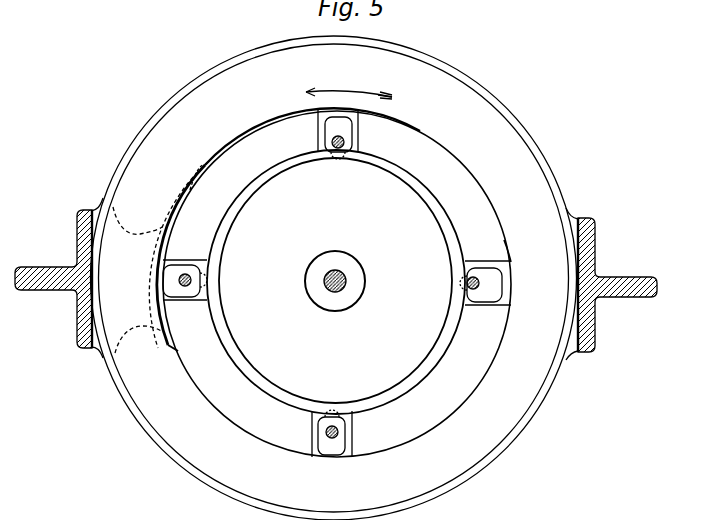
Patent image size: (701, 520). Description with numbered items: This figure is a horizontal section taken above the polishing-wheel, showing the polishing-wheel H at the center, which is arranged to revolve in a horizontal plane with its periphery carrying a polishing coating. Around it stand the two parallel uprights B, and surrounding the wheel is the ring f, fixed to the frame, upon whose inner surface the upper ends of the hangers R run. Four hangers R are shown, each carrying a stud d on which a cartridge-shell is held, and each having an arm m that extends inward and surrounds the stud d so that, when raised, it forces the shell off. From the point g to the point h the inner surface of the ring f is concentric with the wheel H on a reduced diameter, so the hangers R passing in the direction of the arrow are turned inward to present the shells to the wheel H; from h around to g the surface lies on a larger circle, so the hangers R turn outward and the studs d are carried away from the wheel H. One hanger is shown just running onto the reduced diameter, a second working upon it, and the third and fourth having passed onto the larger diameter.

The uprights B is at (336, 281).
The ring f is at (335, 278).
The hangers R is at (334, 272).
The arm m is at (332, 286).
The stud d is at (325, 142).
The point h of ring inner surface h is at (200, 172).
The point g of ring inner surface g is at (505, 252).
The polishing-wheel H is at (335, 280).